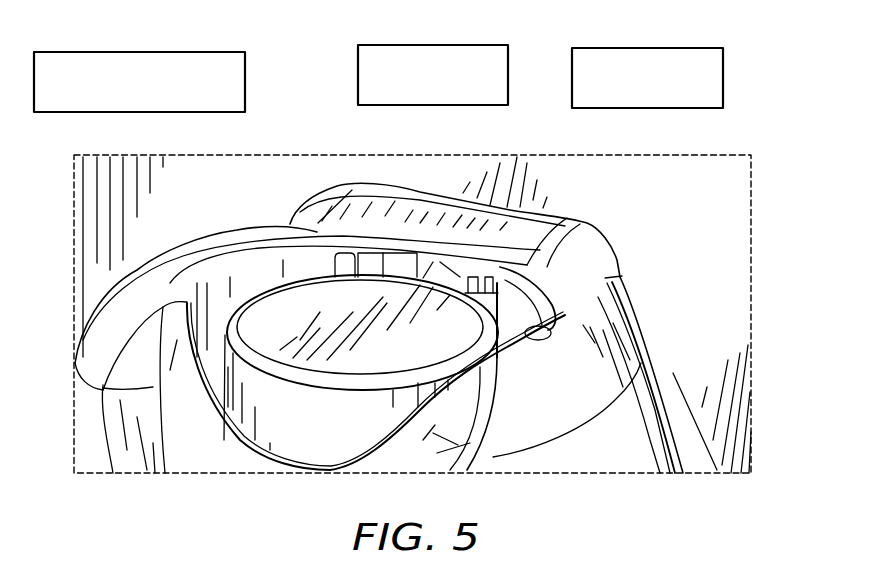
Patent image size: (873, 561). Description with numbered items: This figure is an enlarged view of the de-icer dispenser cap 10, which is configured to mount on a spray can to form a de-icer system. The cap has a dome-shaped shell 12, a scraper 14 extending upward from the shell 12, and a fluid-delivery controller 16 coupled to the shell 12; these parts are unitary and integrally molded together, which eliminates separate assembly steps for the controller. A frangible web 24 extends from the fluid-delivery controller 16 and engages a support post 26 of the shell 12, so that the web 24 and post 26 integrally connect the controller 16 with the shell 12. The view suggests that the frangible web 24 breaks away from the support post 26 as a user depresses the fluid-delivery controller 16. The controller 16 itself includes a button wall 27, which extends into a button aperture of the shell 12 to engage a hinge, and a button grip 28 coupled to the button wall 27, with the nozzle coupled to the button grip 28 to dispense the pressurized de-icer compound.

The de-icer dispenser cap 10 is at (758, 82).
The dome-shaped shell 12 is at (637, 430).
The scraper 14 is at (715, 183).
The fluid-delivery controller 16 is at (283, 317).
The frangible web 24 is at (473, 290).
The support post 26 is at (497, 285).
The button wall 27 is at (290, 423).
The button grip 28 is at (328, 303).